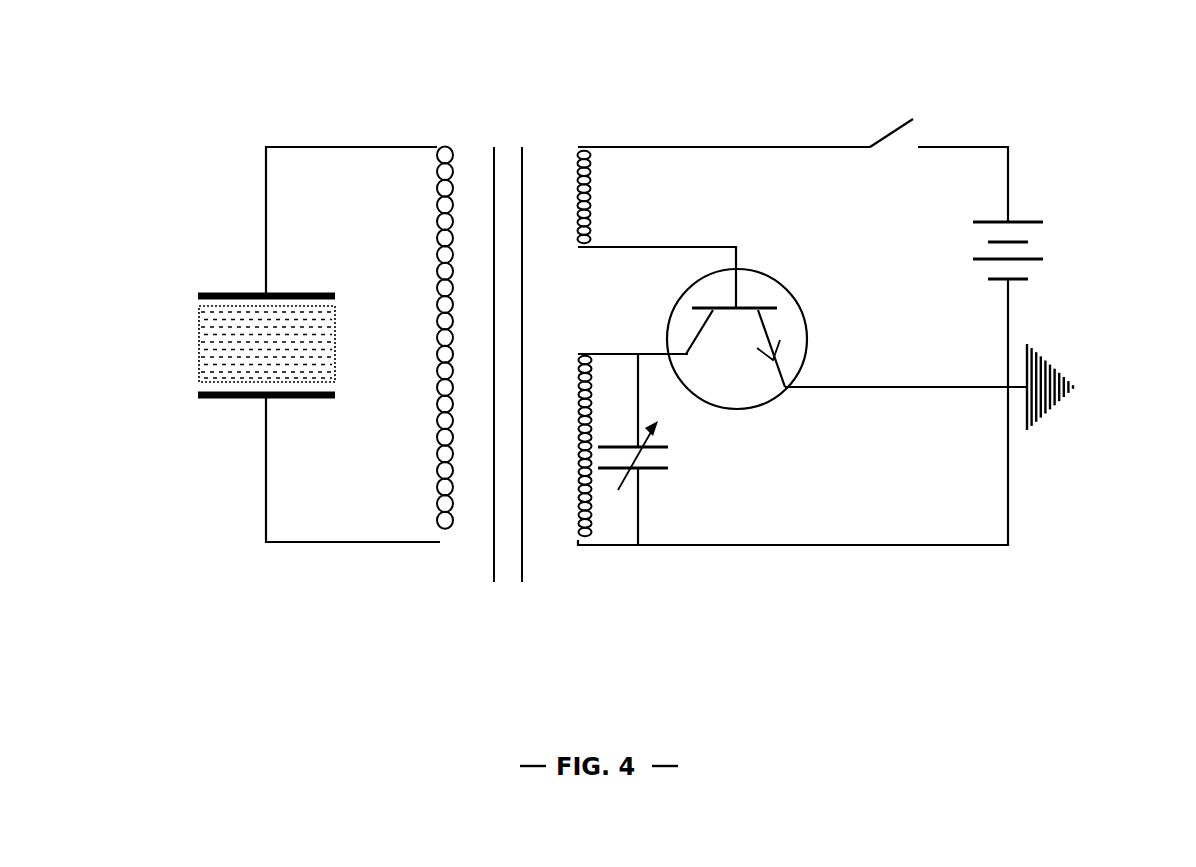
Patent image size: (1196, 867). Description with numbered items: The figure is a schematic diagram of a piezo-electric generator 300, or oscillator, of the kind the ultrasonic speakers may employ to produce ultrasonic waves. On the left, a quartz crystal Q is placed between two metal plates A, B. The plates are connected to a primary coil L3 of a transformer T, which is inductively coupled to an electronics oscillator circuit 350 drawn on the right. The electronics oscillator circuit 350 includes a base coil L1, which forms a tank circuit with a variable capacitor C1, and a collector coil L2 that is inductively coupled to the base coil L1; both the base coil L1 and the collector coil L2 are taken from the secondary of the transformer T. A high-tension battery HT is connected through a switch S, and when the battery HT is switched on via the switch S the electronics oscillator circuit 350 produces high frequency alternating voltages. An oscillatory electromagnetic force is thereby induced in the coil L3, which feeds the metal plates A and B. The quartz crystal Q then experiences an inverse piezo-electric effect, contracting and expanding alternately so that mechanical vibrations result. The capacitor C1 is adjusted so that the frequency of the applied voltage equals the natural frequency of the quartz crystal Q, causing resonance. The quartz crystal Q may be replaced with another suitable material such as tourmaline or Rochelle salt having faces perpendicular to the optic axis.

The piezo-electric generator 300 is at (667, 332).
The electronics oscillator circuit 350 is at (806, 295).
The metal plate A is at (252, 297).
The metal plate B is at (252, 402).
The quartz crystal Q is at (252, 344).
The primary coil L3 is at (426, 338).
The collector coil L2 is at (565, 197).
The base coil L1 is at (567, 446).
The variable capacitor C1 is at (651, 449).
The transformer T is at (508, 382).
The switch S is at (860, 177).
The battery HT is at (986, 267).